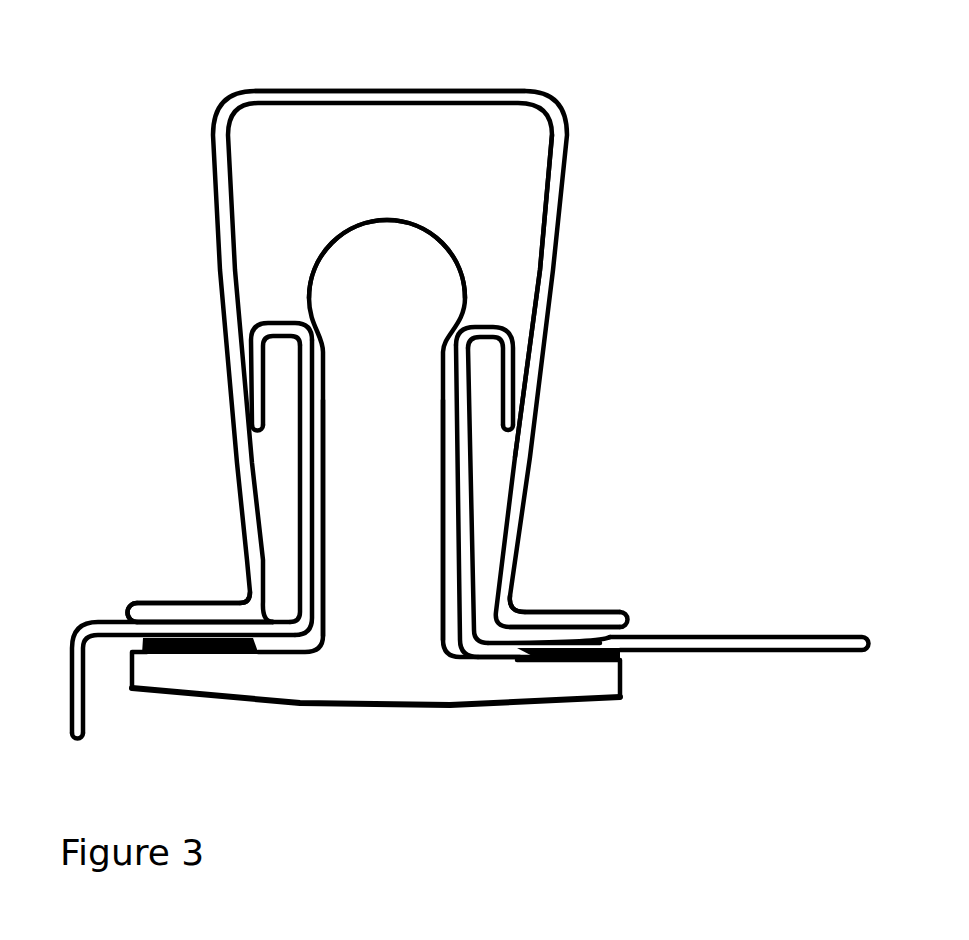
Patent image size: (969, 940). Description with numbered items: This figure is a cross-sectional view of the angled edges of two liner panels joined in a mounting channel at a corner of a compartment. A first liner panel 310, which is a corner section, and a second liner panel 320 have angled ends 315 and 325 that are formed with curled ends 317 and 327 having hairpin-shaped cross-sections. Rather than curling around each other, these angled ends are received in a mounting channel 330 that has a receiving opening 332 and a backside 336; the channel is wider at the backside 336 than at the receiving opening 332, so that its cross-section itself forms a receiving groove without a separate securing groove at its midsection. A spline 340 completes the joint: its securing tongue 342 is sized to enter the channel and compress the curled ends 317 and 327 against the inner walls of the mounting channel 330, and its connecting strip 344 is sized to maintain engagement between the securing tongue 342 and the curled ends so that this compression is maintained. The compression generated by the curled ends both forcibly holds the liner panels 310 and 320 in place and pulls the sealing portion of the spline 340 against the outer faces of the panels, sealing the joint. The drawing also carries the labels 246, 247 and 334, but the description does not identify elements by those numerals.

The circuit board 246 is at (435, 683).
The contact sheet / conductive layer 247 is at (137, 648).
The first liner panel 310 is at (110, 623).
The angled end 315 is at (298, 462).
The curled end 317 is at (262, 327).
The second liner panel 320 is at (645, 643).
The angled end 325 is at (458, 466).
The curled end 327 is at (500, 326).
The mounting channel 330 is at (520, 92).
The receiving opening 332 is at (252, 610).
The side wall 334 is at (543, 141).
The backside 336 is at (389, 92).
The spline 340 is at (316, 257).
The securing tongue 342 is at (392, 289).
The connecting strip 344 is at (396, 538).